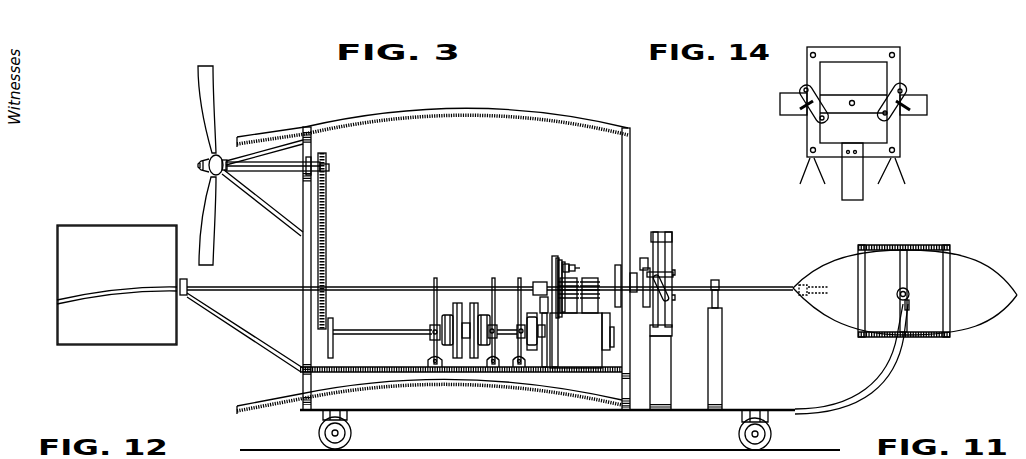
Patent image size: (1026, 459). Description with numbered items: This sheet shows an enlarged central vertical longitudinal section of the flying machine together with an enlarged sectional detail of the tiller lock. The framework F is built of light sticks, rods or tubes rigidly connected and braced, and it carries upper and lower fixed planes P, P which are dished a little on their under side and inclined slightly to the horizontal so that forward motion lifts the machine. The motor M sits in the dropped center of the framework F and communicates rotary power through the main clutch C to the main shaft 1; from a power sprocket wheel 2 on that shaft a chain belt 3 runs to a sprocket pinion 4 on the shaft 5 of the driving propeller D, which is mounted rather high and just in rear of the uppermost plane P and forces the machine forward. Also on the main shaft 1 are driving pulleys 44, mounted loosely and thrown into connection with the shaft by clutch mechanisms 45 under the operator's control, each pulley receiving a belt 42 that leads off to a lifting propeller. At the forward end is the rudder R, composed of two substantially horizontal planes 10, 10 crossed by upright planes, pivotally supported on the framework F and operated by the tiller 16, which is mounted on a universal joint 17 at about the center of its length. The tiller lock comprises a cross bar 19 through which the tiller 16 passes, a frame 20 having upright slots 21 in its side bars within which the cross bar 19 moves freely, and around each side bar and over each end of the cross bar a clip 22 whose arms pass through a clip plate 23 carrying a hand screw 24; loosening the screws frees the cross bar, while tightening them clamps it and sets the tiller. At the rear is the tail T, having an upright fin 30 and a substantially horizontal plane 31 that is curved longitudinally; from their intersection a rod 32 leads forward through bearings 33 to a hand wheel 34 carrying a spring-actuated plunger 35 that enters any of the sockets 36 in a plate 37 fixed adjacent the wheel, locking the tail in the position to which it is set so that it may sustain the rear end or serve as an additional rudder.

In FIG. 3, the main shaft 1 is at (353, 330).
In FIG. 3, the power sprocket wheel 2 is at (320, 333).
In FIG. 3, the chain belt 3 is at (327, 240).
In FIG. 3, the sprocket pinion 4 is at (329, 168).
In FIG. 3, the propeller shaft 5 is at (281, 170).
In FIG. 3, the horizontal planes 10 is at (933, 247).
In FIG. 3, the tiller 16 is at (762, 289).
In FIG. 14, the tiller 16 is at (853, 101).
In FIG. 3, the universal joint 17 is at (716, 283).
In FIG. 3, the cross bar 19 is at (663, 287).
In FIG. 14, the cross bar 19 is at (927, 109).
In FIG. 3, the frame 20 is at (663, 233).
In FIG. 14, the frame 20 is at (864, 55).
In FIG. 3, the upright slots 21 is at (663, 347).
In FIG. 3, the clip 22 is at (664, 272).
In FIG. 14, the clip 22 is at (803, 88).
In FIG. 3, the clip plate 23 is at (647, 258).
In FIG. 14, the clip plate 23 is at (815, 115).
In FIG. 14, the hand screw 24 is at (783, 106).
In FIG. 3, the upright plane or fin 30 is at (66, 256).
In FIG. 3, the horizontal plane 31 is at (75, 292).
In FIG. 3, the rod 32 is at (244, 287).
In FIG. 3, the bearings 33 is at (180, 279).
In FIG. 3, the hand wheel 34 is at (566, 262).
In FIG. 3, the spring-actuated plunger 35 is at (575, 268).
In FIG. 3, the sockets 36 is at (557, 258).
In FIG. 3, the plate 37 is at (564, 262).
In FIG. 3, the belt 42 is at (474, 302).
In FIG. 3, the driving pulley 44 is at (453, 313).
In FIG. 3, the clutch mechanism 45 is at (493, 327).
In FIG. 3, the main clutch C is at (534, 282).
In FIG. 3, the driving propeller D is at (203, 108).
In FIG. 3, the framework F is at (465, 104).
In FIG. 3, the motor M is at (582, 323).
In FIG. 3, the fixed planes P is at (517, 117).
In FIG. 3, the rudder R is at (905, 276).
In FIG. 3, the tail T is at (117, 269).